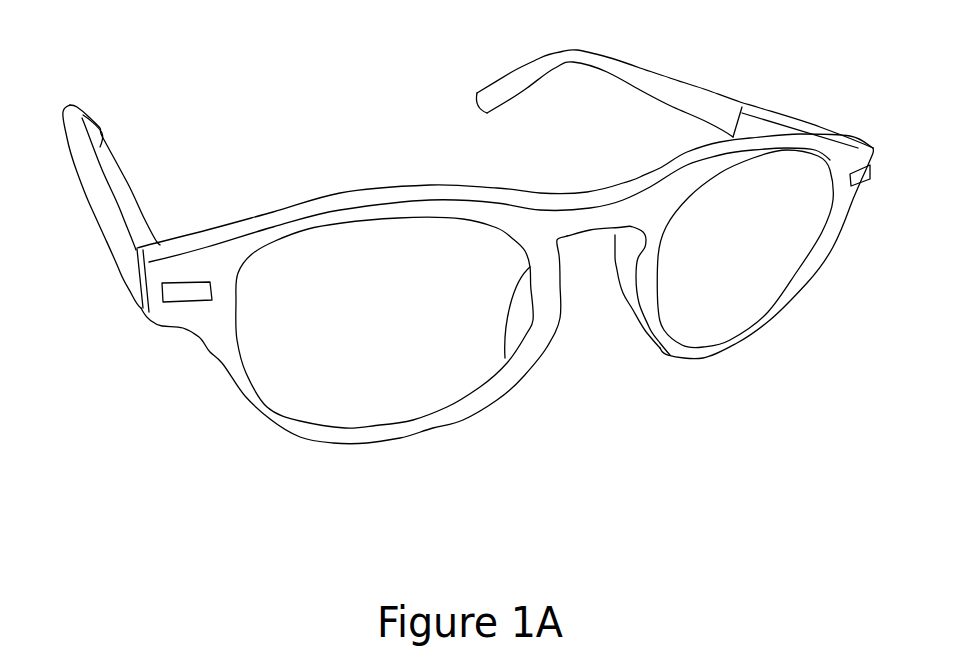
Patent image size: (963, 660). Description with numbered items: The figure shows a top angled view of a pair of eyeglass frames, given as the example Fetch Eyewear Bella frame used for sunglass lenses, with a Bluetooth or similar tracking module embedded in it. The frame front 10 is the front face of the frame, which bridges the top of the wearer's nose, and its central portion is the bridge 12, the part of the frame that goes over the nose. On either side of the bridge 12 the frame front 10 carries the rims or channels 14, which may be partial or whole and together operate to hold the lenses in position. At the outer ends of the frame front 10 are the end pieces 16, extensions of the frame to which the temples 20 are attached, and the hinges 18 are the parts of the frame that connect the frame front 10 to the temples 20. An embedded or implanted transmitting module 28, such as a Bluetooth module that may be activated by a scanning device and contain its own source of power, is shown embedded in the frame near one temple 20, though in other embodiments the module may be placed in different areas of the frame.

The frame front 10 is at (427, 185).
The bridge 12 is at (587, 192).
The rims or channels 14 is at (387, 427).
The end pieces 16 is at (173, 328).
The hinges 18 is at (137, 307).
The temple arm 20 is at (107, 237).
The embedded or implanted transmitting module 28 is at (775, 113).